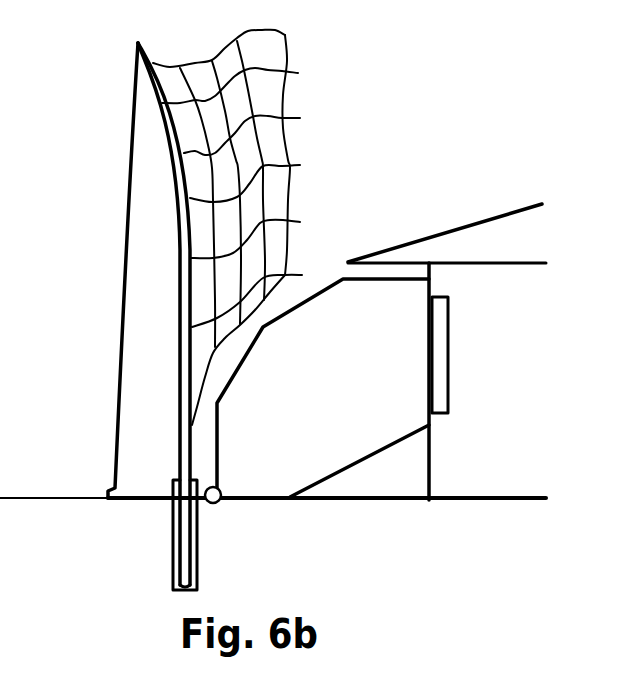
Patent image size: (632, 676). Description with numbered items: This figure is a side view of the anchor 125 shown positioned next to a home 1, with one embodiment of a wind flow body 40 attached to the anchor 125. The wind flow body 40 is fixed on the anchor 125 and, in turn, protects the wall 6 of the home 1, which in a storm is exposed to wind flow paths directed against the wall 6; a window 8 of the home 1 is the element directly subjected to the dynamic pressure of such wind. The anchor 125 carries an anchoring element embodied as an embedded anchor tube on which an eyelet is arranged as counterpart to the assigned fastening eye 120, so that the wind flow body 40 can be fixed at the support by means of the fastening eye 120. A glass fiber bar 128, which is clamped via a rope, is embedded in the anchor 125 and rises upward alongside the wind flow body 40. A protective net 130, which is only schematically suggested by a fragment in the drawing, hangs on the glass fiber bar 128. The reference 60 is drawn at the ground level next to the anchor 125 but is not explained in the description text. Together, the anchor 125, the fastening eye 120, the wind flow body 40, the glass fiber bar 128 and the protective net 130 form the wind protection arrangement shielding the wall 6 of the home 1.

The home 1 is at (471, 199).
The wall 6 is at (430, 468).
The window 8 is at (438, 355).
The wind flow body 40 is at (322, 425).
The ground / base line 60 is at (65, 502).
The fastening eye 120 is at (215, 500).
The anchor 125 is at (150, 545).
The glass fiber bar 128 is at (185, 208).
The protective net 130 is at (247, 113).